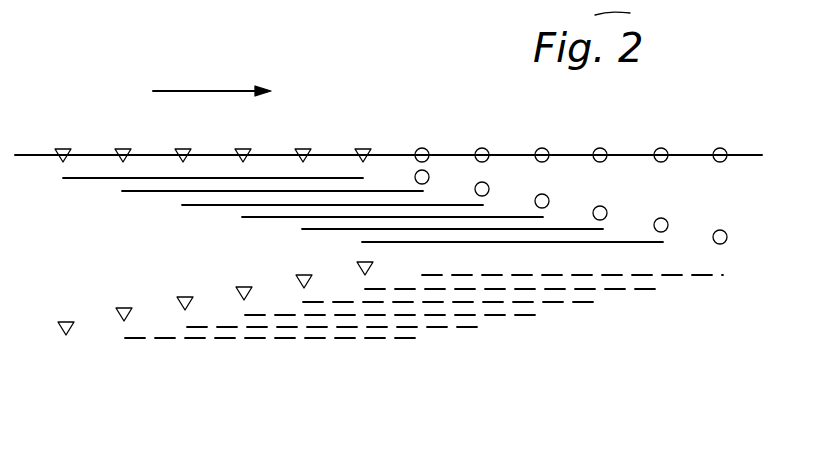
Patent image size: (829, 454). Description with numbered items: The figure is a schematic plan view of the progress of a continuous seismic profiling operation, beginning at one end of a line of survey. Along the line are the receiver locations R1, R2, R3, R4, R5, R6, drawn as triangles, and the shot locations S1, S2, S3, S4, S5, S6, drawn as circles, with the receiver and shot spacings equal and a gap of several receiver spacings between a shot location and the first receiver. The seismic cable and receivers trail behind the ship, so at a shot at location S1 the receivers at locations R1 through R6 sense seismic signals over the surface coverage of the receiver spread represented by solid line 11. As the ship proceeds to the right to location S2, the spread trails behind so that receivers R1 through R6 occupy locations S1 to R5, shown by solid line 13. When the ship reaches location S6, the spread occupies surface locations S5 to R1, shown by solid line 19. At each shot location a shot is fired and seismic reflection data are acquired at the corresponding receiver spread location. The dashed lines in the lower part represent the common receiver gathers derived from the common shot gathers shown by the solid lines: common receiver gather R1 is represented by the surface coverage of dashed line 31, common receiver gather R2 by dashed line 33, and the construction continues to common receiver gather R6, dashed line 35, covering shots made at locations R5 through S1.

The solid line 11 is at (83, 178).
The solid line 13 is at (147, 191).
The solid line 19 is at (388, 242).
The dashed line 31 is at (693, 277).
The dashed line 33 is at (628, 291).
The dashed line 35 is at (370, 340).
The receiver location R1 is at (363, 139).
The receiver location R2 is at (303, 139).
The receiver location R3 is at (243, 139).
The receiver location R4 is at (183, 139).
The receiver location R5 is at (123, 139).
The receiver location R6 is at (63, 139).
The shot location S1 is at (423, 139).
The shot location S2 is at (483, 139).
The shot location S3 is at (543, 139).
The shot location S4 is at (601, 139).
The shot location S5 is at (662, 139).
The shot location S6 is at (721, 139).